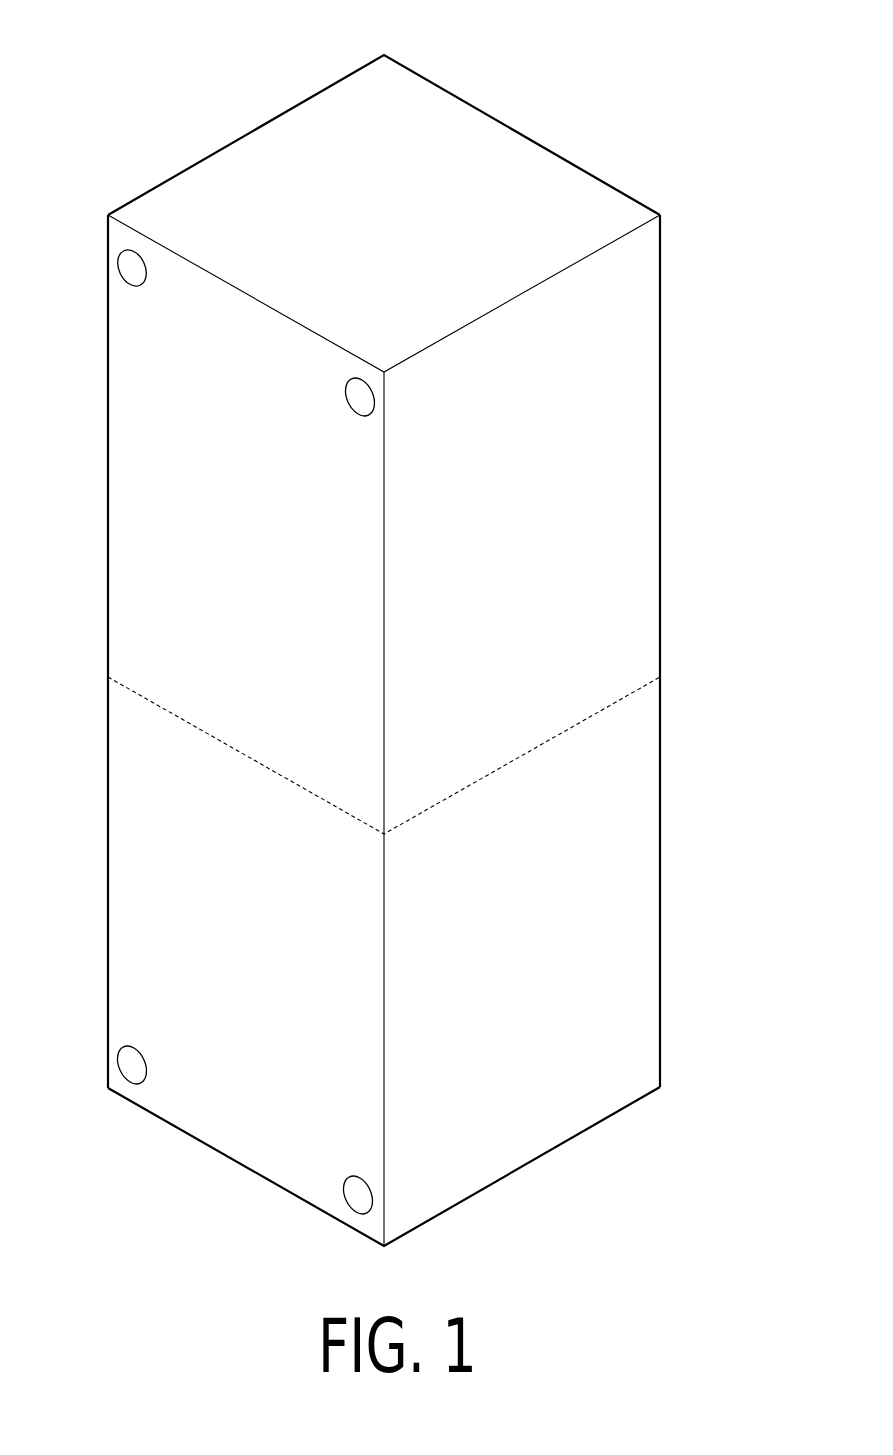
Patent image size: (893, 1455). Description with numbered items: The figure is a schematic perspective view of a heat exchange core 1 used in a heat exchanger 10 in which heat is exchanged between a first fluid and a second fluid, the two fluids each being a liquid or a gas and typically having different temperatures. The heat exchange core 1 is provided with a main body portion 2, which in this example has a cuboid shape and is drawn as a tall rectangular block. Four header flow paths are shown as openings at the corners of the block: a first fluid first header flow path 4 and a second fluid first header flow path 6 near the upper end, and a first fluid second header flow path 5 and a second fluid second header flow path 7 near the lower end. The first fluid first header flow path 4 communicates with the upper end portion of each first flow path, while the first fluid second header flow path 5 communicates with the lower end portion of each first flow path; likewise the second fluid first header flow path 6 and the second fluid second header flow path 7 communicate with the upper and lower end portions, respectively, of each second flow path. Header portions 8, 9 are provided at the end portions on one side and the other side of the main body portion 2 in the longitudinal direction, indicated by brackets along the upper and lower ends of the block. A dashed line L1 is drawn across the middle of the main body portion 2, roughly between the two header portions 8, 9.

The heat exchange core 1 is at (199, 79).
The heat exchanger 10 is at (384, 623).
The main body portion 2 is at (660, 555).
The first fluid first header flow path 4 is at (125, 270).
The first fluid second header flow path 5 is at (125, 1059).
The second fluid first header flow path 6 is at (353, 402).
The second fluid second header flow path 7 is at (357, 1200).
The header portion 8 is at (711, 211).
The header portion 9 is at (711, 990).
The boundary line L1 is at (613, 702).